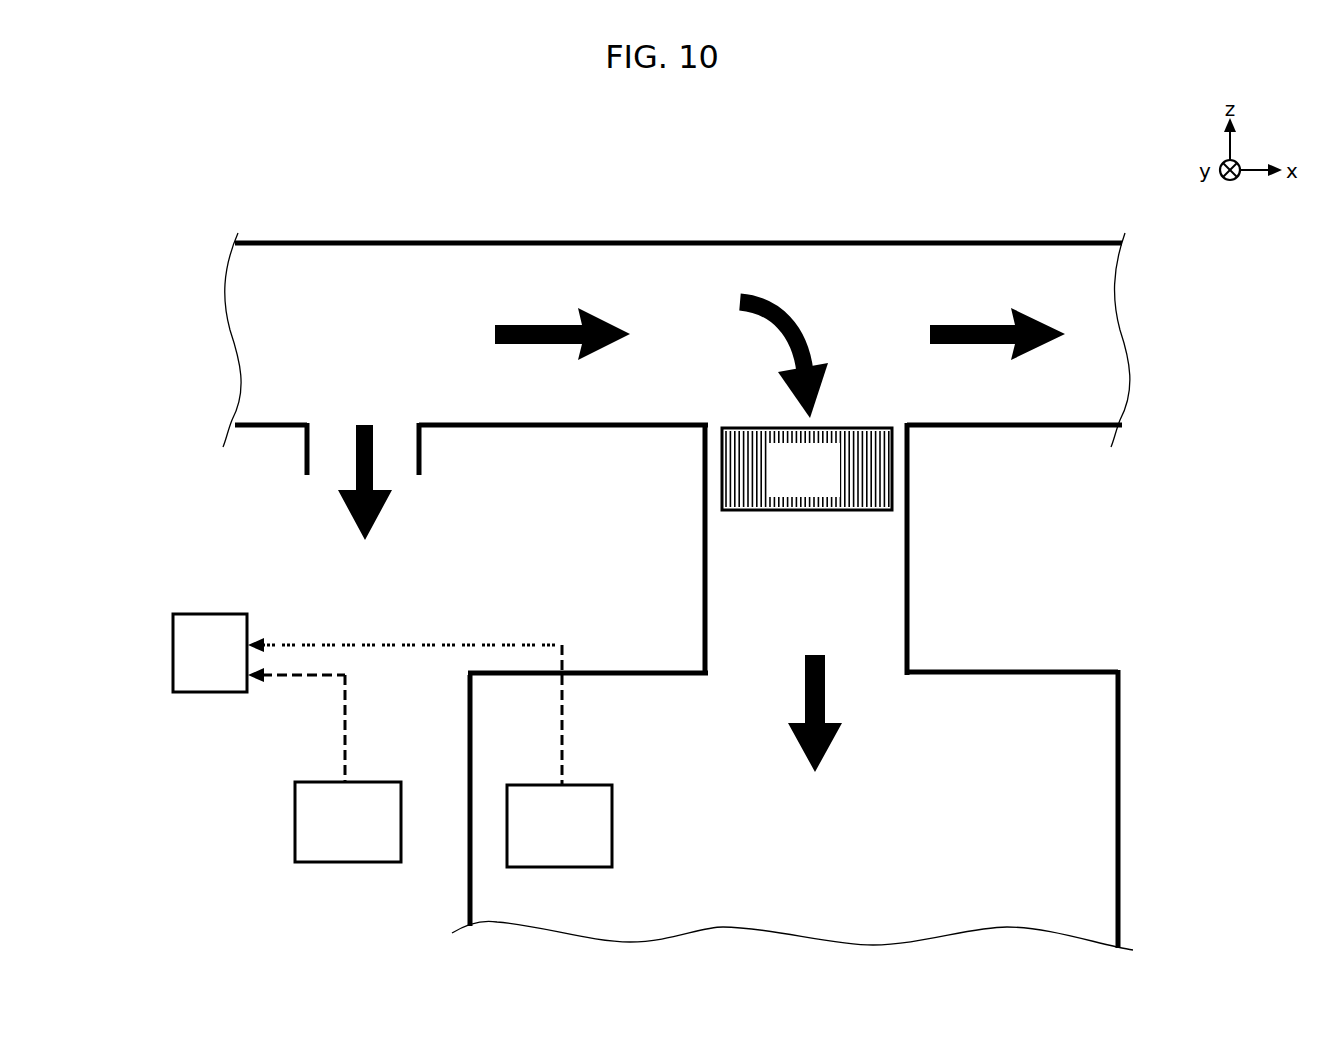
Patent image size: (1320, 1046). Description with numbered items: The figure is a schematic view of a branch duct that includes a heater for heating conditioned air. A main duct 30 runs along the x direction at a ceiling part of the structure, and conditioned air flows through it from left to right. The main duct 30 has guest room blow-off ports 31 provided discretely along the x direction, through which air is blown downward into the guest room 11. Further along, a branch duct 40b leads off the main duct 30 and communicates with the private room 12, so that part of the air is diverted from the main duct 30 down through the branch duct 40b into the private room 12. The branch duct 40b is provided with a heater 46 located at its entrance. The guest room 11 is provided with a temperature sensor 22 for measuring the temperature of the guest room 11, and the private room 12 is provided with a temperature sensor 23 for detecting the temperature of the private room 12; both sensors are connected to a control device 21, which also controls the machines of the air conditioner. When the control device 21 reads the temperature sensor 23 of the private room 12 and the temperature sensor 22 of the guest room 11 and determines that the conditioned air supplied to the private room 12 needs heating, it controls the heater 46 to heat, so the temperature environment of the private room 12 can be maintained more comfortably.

The main duct 30 is at (321, 301).
The guest room blow-off port 31 is at (331, 462).
The heater 46 is at (820, 484).
The branch duct 40b is at (898, 610).
The control device 21 is at (227, 666).
The temperature sensor 22 is at (364, 835).
The temperature sensor 23 is at (577, 840).
The guest room 11 is at (318, 912).
The private room 12 is at (1089, 908).